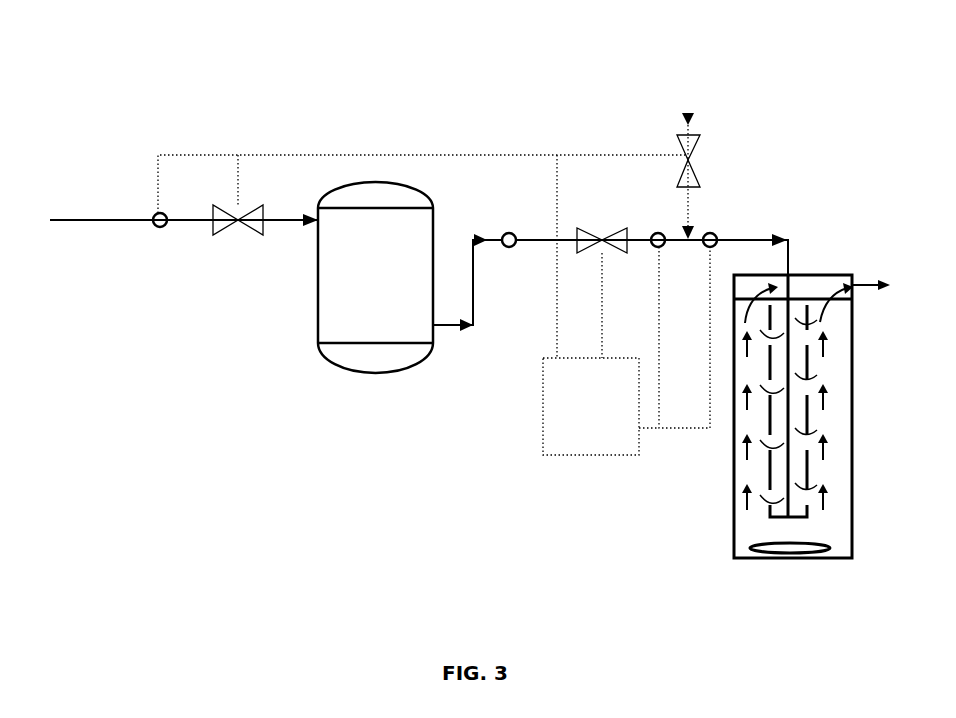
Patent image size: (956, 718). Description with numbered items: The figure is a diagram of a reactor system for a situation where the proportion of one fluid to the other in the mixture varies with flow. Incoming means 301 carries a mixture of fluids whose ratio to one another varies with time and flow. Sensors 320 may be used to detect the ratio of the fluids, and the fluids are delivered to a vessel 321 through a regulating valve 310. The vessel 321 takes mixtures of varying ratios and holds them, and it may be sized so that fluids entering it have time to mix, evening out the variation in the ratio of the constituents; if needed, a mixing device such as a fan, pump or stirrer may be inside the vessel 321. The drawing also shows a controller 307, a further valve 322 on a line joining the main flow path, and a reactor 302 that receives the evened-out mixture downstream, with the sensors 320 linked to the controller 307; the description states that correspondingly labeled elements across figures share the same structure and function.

The incoming means 301 is at (70, 222).
The regulating valve 310 is at (228, 222).
The sensors 320 is at (718, 238).
The vessel 321 is at (393, 295).
The control valve 322 is at (695, 138).
The controller 307 is at (605, 412).
The bioreactor tank 302 is at (858, 443).